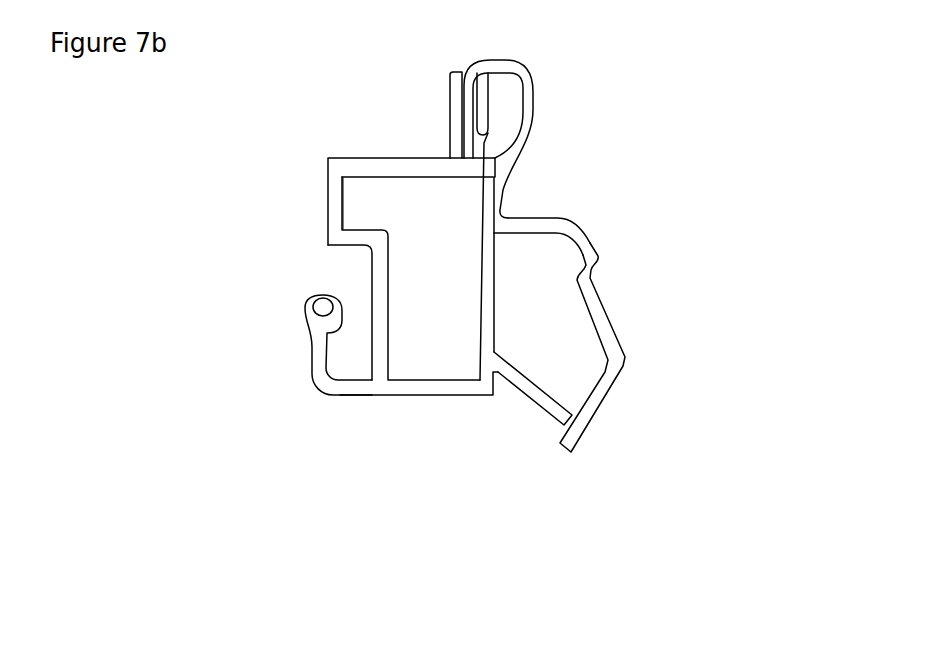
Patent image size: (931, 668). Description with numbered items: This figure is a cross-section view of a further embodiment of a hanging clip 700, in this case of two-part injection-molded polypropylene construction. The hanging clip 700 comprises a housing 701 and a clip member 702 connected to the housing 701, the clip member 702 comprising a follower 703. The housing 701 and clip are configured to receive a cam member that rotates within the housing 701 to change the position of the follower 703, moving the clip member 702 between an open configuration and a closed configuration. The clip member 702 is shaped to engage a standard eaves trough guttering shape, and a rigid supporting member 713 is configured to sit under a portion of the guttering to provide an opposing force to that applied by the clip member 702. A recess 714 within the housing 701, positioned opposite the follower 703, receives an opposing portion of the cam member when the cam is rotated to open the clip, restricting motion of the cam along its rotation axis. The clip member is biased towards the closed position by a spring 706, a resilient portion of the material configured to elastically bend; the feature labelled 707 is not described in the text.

The hanging clip 700 is at (285, 477).
The housing 701 is at (372, 272).
The clip member 702 is at (580, 287).
The follower 703 is at (498, 202).
The spring 706 is at (513, 67).
The hook 707 is at (320, 357).
The rigid supporting member 713 is at (513, 382).
The recess 714 is at (345, 191).